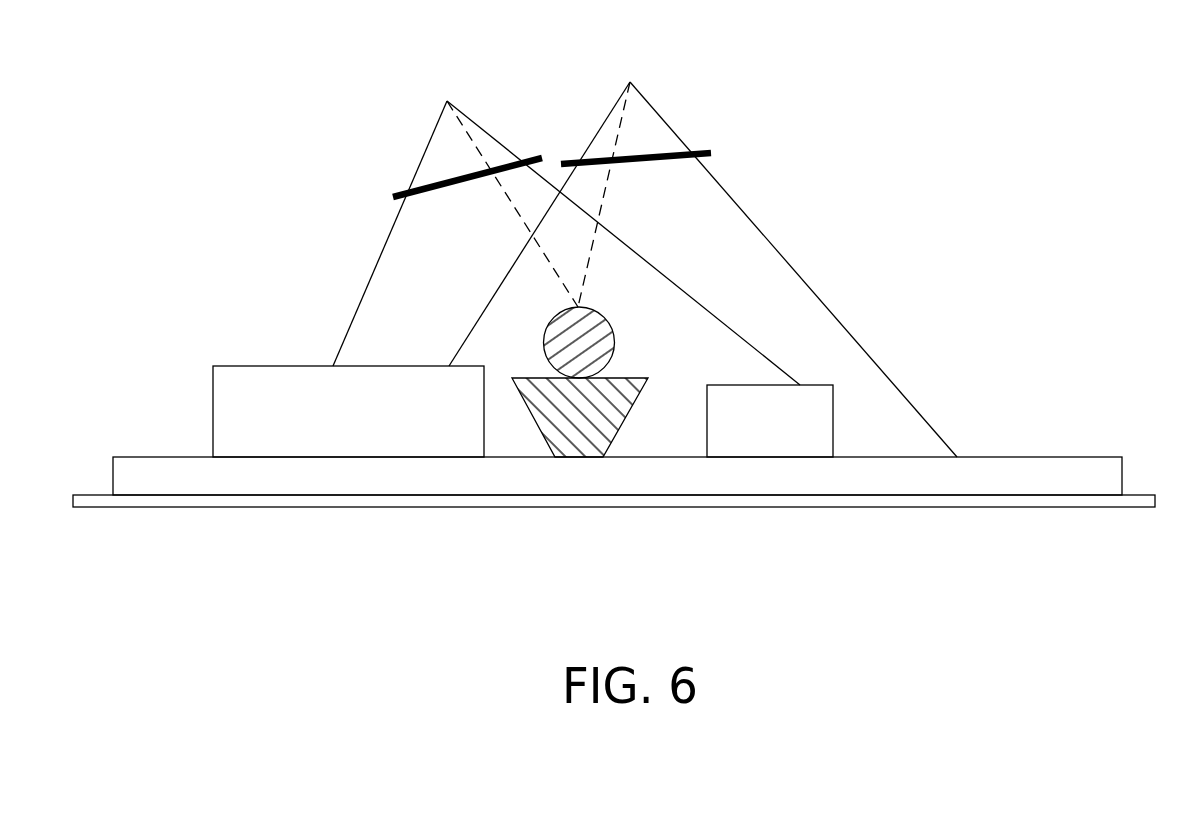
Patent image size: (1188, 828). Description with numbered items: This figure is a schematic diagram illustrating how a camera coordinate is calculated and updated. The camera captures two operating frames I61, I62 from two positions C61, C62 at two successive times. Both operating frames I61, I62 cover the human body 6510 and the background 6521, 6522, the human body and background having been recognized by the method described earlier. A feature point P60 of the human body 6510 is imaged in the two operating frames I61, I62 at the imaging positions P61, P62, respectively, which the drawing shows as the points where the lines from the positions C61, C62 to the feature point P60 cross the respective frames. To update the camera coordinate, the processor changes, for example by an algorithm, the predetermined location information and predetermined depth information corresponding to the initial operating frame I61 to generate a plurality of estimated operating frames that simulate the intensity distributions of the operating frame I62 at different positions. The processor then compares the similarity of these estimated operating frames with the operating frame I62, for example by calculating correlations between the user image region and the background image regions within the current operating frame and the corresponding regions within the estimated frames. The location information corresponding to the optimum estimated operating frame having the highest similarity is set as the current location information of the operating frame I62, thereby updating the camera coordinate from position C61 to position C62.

The first camera position C61 is at (566, 221).
The second camera position C62 is at (703, 251).
The first operating frame I61 is at (438, 187).
The second operating frame I62 is at (670, 157).
The imaging position of feature point in first operating frame P61 is at (512, 204).
The imaging position of feature point in second operating frame P62 is at (624, 194).
The feature point P60 is at (596, 330).
The human body 6510 is at (542, 438).
The background 6521 is at (373, 467).
The background 6522 is at (755, 463).